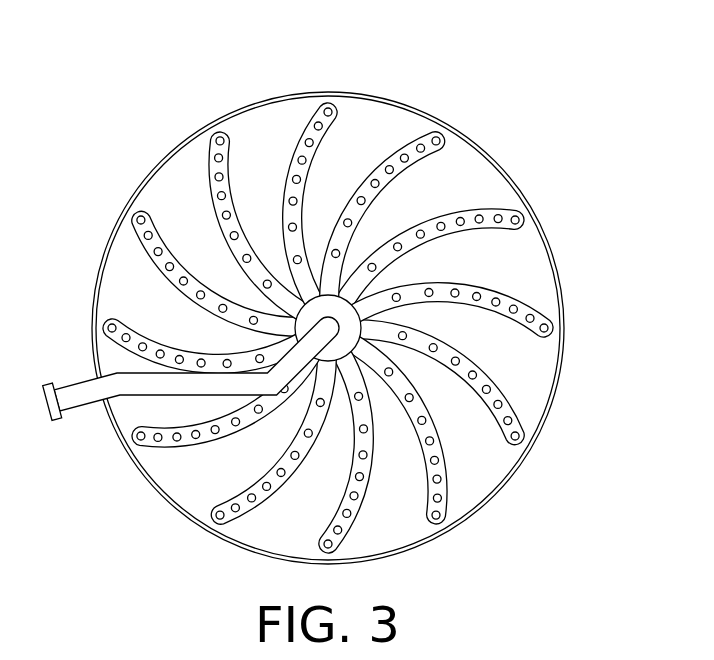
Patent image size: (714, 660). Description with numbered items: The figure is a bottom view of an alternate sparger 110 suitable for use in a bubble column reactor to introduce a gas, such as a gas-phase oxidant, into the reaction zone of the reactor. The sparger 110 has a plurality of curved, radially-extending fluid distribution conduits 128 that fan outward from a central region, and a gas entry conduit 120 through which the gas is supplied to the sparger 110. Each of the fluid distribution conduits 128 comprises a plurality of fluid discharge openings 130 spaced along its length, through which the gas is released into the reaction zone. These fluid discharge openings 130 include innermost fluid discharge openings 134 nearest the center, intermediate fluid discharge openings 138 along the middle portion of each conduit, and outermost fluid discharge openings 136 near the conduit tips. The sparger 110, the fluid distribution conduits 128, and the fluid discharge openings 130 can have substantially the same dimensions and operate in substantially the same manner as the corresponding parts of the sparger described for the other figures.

The sparger 110 is at (388, 222).
The gas entry conduit 120 is at (155, 388).
The fluid distribution conduits 128 is at (313, 113).
The fluid discharge openings 130 is at (455, 149).
The innermost fluid discharge openings 134 is at (400, 295).
The outermost fluid discharge openings 136 is at (545, 332).
The intermediate fluid discharge openings 138 is at (526, 325).